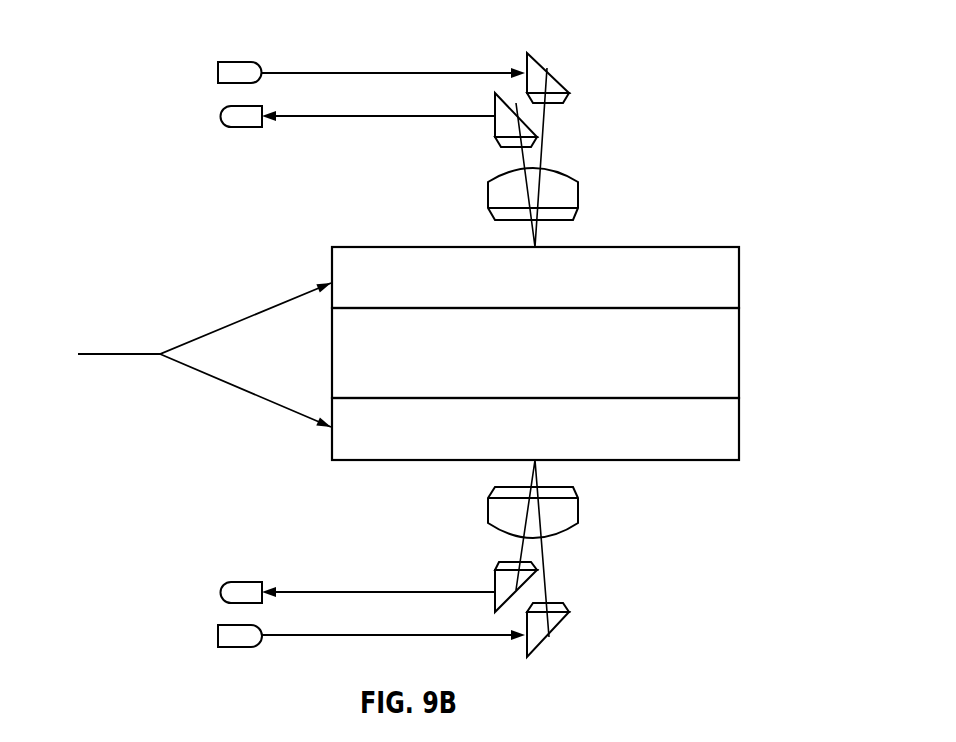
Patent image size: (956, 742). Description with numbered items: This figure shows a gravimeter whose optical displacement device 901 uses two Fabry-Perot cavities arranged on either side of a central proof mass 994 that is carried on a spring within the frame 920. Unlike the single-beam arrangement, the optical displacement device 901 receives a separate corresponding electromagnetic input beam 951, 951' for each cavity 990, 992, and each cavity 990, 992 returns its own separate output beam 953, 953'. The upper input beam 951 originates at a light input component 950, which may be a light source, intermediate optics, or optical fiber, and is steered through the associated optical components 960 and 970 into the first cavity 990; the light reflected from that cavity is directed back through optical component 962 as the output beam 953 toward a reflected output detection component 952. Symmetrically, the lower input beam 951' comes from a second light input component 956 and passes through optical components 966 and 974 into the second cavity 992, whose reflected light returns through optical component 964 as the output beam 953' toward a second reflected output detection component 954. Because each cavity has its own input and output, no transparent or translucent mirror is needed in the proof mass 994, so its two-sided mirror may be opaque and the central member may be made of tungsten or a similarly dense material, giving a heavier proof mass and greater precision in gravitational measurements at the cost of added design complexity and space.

The optical displacement device 901 is at (740, 35).
The frame 920 is at (95, 352).
The light input component 950 is at (237, 62).
The input beam 951 is at (393, 57).
The reflected output port 952 is at (237, 127).
The output beam 953 is at (378, 131).
The second reflected output port 954 is at (237, 581).
The output beam 953' is at (378, 577).
The light input component 956 is at (237, 647).
The input beam 951' is at (393, 650).
The optical component 960 is at (549, 70).
The optical component 962 is at (507, 147).
The optical component 964 is at (507, 562).
The optical component 966 is at (548, 634).
The optical component 970 is at (578, 196).
The optical component 974 is at (578, 510).
The cavity 990 is at (759, 300).
The cavity 992 is at (759, 389).
The proof mass 994 is at (330, 355).